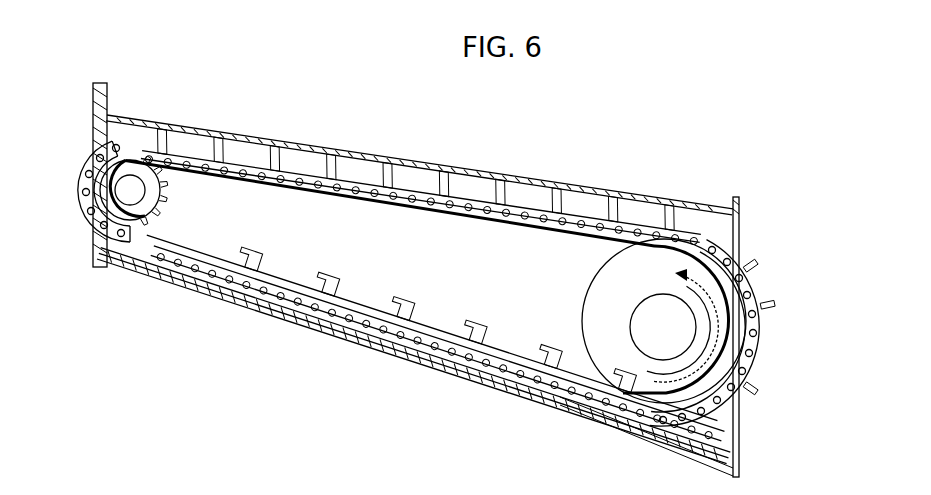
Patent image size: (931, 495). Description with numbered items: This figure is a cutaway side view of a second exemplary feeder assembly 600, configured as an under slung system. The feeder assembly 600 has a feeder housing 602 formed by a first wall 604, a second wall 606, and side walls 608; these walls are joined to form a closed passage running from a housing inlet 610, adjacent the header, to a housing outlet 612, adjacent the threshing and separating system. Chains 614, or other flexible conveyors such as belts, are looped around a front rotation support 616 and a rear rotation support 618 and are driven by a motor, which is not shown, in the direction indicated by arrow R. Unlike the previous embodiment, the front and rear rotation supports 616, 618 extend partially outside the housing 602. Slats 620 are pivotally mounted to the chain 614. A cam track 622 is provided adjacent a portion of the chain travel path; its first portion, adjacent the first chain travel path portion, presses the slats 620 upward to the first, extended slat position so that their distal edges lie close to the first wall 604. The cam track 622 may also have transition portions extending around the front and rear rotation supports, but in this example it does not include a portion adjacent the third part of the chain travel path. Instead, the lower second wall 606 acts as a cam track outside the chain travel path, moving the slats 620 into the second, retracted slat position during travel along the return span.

The feeder assembly 600 is at (298, 97).
The feeder housing 602 is at (416, 185).
The first wall 604 is at (475, 172).
The second wall 606 is at (418, 326).
The side walls 608 is at (431, 332).
The housing inlet 610 is at (741, 439).
The housing outlet 612 is at (87, 131).
The chains 614 is at (415, 331).
The front rotation support 616 is at (599, 298).
The rear rotation support 618 is at (168, 189).
The slats 620 is at (381, 299).
The cam track 622 is at (314, 190).
The arrow R is at (710, 264).